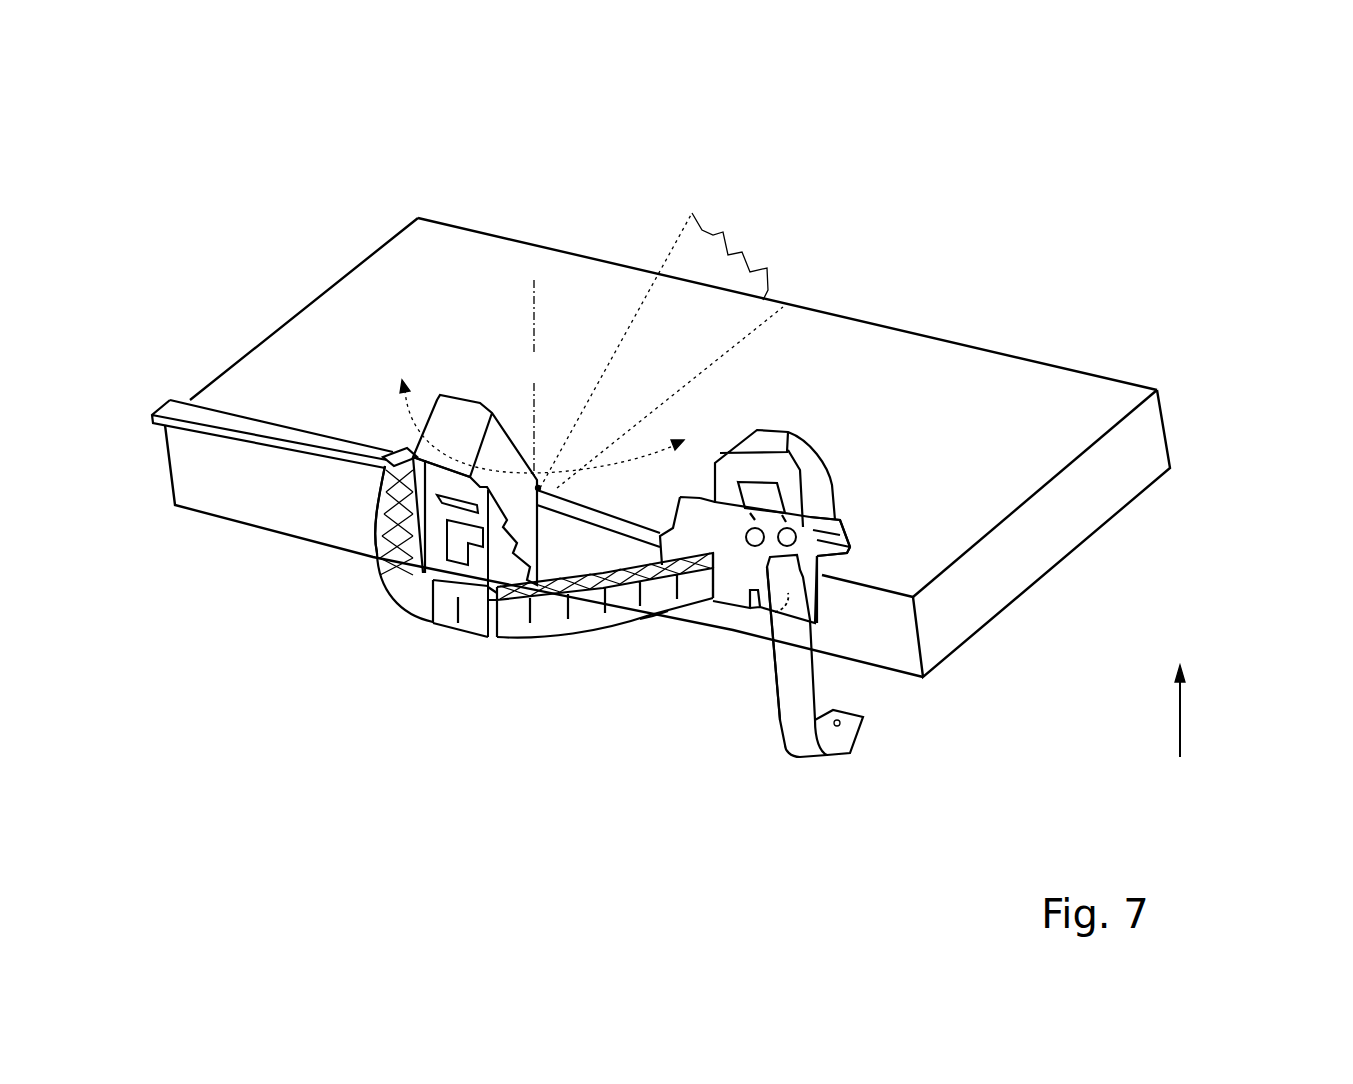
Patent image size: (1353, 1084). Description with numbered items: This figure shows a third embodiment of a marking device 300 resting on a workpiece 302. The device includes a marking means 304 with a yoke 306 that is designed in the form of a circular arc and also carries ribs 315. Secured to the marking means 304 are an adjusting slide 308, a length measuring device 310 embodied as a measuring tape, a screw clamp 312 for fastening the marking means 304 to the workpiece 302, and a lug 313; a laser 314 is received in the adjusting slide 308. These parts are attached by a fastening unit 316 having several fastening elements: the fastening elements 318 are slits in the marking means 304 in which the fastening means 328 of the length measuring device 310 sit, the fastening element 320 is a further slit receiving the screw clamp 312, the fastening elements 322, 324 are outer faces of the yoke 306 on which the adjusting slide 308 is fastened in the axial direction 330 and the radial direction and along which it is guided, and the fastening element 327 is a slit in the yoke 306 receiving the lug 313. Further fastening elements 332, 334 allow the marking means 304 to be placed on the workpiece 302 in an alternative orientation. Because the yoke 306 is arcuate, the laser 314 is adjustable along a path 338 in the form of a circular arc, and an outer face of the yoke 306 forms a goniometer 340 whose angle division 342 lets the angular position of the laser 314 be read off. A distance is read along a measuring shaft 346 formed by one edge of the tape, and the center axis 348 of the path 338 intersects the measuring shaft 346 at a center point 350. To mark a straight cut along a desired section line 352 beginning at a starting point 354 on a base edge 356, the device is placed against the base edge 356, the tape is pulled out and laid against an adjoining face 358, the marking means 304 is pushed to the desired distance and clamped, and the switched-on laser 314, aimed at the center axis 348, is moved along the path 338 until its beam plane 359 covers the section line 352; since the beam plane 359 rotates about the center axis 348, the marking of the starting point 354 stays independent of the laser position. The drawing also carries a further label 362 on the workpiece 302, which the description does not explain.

The marking device 300 is at (375, 732).
The workpiece 302 is at (673, 246).
The marking means 304 is at (605, 691).
The yoke 306 is at (598, 692).
The adjusting slide 308 is at (288, 646).
The length measuring device 310 is at (1007, 488).
The screw clamp 312 is at (882, 662).
The lug 313 is at (355, 351).
The laser 314 is at (489, 339).
The ribs 315 is at (783, 724).
The fastening unit 316 is at (725, 710).
The fastening elements 318 is at (981, 532).
The fastening element 320 is at (978, 597).
The fastening element 322 is at (771, 358).
The fastening element 324 is at (657, 732).
The fastening element 327 is at (226, 594).
The fastening means 328 is at (1001, 563).
The axial direction 330 is at (1180, 727).
The further fastening element 332 is at (931, 644).
The further fastening element 334 is at (934, 625).
The path 338 is at (446, 382).
The goniometer 340 is at (465, 678).
The angle division 342 is at (467, 689).
The measuring shaft 346 is at (477, 342).
The center axis 348 is at (589, 303).
The center point 350 is at (628, 292).
The section line 352 is at (782, 290).
The starting point 354 is at (600, 301).
The base edge 356 is at (544, 385).
The face 358 is at (1035, 362).
The beam plane 359 is at (822, 214).
The panel end face 362 is at (1055, 385).